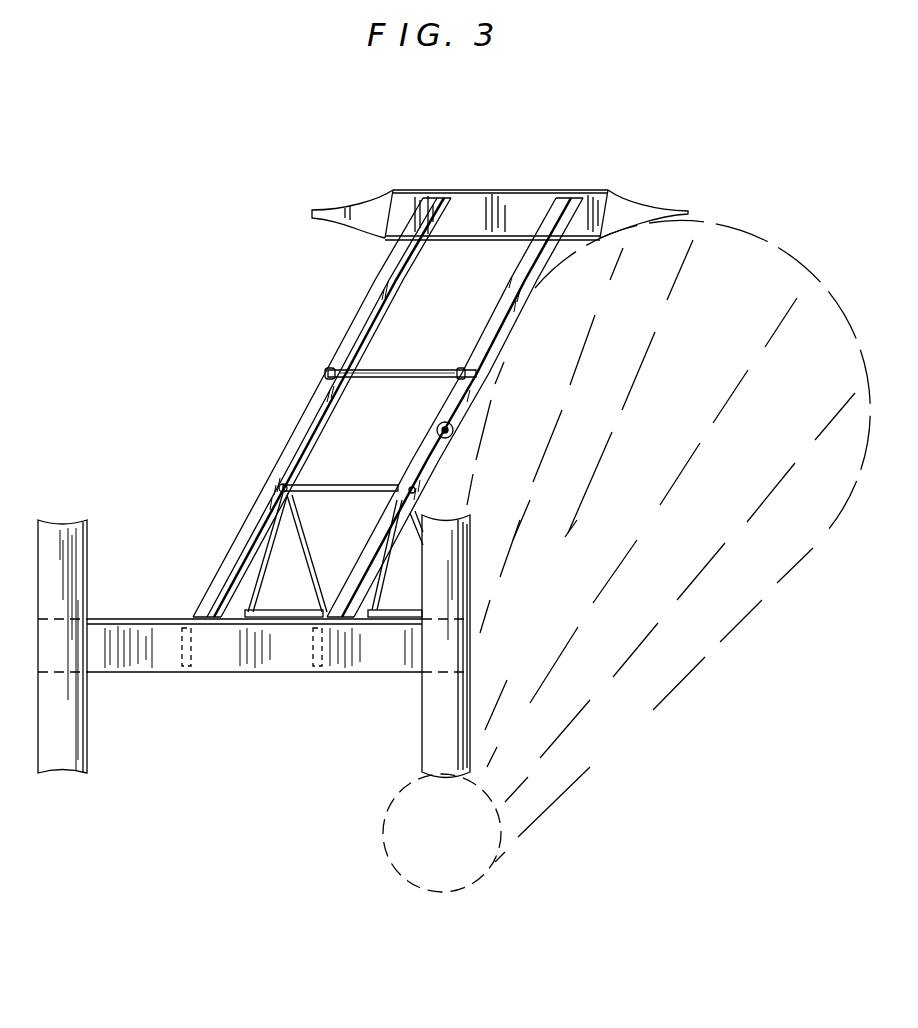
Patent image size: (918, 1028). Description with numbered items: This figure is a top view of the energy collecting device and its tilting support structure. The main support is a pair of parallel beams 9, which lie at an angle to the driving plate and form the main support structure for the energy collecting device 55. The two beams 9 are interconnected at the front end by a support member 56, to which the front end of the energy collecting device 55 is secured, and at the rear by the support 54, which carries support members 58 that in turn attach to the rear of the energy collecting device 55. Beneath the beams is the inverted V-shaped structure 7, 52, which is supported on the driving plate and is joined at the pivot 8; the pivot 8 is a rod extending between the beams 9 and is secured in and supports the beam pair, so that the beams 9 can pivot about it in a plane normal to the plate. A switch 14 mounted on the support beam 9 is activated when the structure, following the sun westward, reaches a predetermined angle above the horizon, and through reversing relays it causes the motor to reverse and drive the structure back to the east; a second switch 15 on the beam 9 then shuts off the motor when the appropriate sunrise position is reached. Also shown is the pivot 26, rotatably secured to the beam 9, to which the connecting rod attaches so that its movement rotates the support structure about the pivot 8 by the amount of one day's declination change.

The inverted V-shaped structure 7 is at (298, 549).
The pivot 8 is at (350, 485).
The beam 9 is at (404, 282).
The switch 14 is at (443, 423).
The switch 15 is at (438, 433).
The pivot 26 is at (428, 372).
The inverted V-shaped structure 52 is at (292, 578).
The support 54 is at (287, 670).
The energy collecting device 55 is at (738, 342).
The support member 56 is at (517, 206).
The support member 58 is at (435, 738).